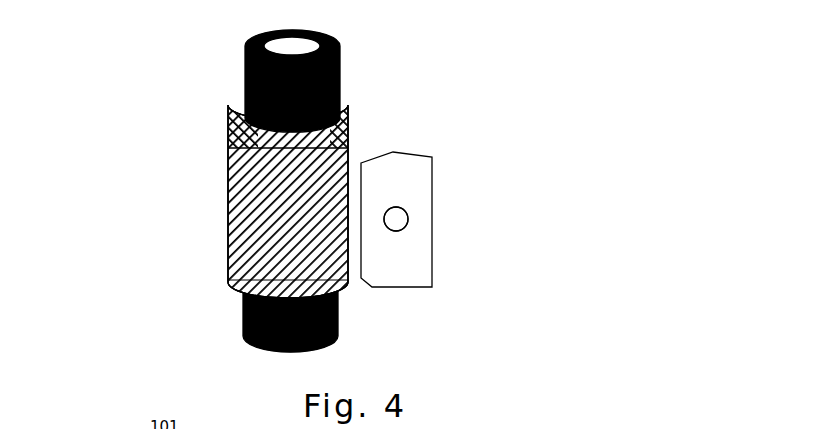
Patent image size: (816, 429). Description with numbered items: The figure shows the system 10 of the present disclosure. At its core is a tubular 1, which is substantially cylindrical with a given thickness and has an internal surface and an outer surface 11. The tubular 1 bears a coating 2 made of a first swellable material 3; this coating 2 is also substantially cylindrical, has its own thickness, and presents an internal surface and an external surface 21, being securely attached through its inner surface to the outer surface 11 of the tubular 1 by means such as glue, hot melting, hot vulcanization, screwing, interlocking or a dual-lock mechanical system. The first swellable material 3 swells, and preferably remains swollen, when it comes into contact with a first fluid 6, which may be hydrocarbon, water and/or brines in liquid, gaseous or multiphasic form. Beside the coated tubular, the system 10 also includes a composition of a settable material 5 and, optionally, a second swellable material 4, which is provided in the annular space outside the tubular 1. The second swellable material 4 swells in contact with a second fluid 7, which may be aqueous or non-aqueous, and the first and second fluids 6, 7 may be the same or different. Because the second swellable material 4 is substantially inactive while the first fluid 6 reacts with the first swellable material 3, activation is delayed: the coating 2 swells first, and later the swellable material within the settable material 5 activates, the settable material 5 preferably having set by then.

The tubular 1 is at (245, 80).
The outer surface 11 is at (337, 72).
The coating 2 is at (230, 148).
The external surface 21 is at (349, 152).
The first fluid 6 is at (230, 217).
The first swellable material 3 is at (288, 201).
The system 10 is at (166, 280).
The second swellable material 4 is at (392, 216).
The second fluid 7 is at (396, 219).
The settable material 5 is at (408, 258).